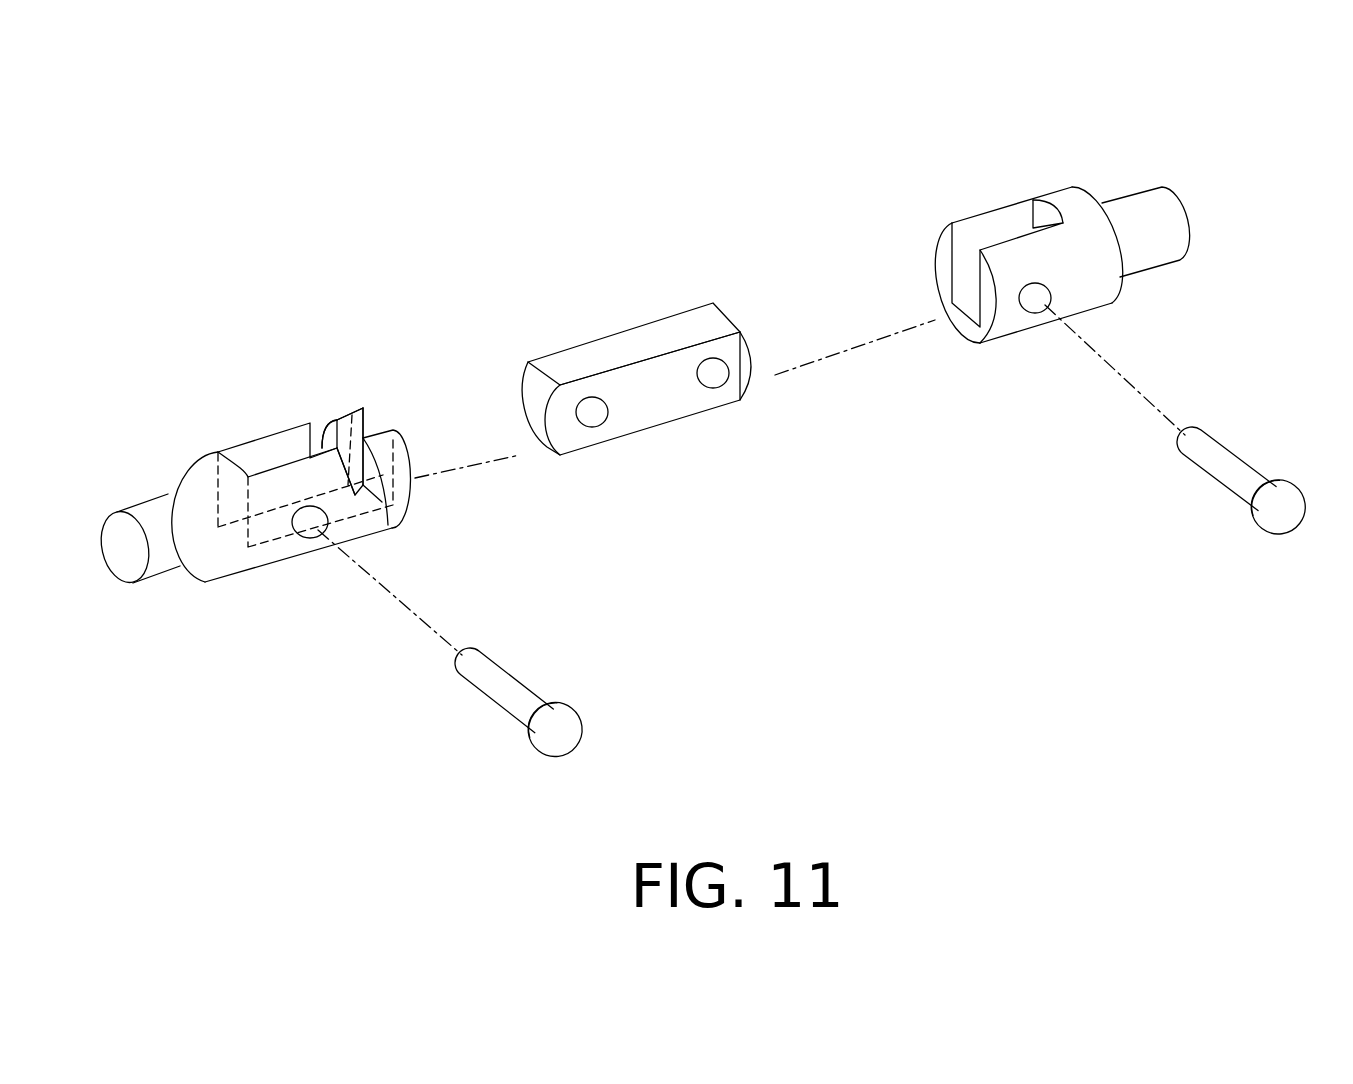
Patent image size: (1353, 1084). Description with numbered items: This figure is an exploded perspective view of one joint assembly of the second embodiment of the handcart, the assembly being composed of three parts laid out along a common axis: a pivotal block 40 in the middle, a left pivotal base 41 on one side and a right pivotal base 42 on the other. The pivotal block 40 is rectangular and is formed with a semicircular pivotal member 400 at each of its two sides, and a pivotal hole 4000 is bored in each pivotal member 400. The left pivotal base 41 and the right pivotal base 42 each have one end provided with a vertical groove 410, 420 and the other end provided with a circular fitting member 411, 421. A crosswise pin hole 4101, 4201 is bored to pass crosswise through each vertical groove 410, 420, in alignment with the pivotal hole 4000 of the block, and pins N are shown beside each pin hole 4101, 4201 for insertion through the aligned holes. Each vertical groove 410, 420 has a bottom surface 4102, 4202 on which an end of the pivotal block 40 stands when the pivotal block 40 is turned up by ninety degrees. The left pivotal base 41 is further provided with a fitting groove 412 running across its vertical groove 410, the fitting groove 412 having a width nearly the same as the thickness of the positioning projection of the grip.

The left pivotal base 41 is at (278, 534).
The vertical groove 410 is at (272, 447).
The circular fitting member 411 is at (155, 515).
The crosswise pin hole 4101 is at (305, 523).
The bottom surface 4102 is at (320, 432).
The fitting groove 412 is at (367, 505).
The pivotal block 40 is at (675, 404).
The semicircular pivotal member 400 is at (567, 398).
The pivotal hole 4000 is at (713, 373).
The right pivotal base 42 is at (1031, 314).
The vertical groove 420 is at (995, 218).
The circular fitting member 421 is at (1143, 213).
The crosswise pin hole 4201 is at (1040, 297).
The bottom surface 4202 is at (963, 295).
The pin N is at (490, 698).